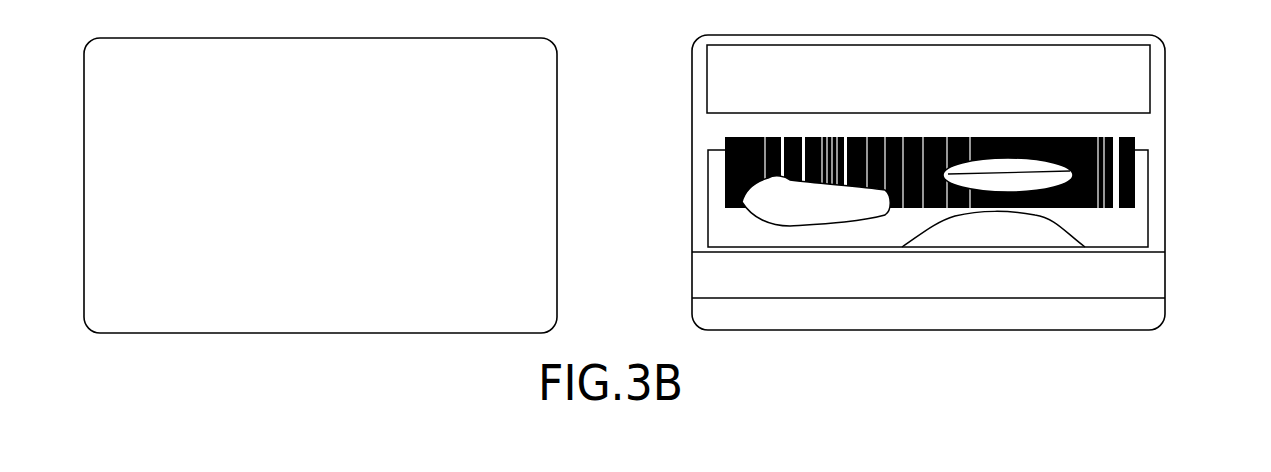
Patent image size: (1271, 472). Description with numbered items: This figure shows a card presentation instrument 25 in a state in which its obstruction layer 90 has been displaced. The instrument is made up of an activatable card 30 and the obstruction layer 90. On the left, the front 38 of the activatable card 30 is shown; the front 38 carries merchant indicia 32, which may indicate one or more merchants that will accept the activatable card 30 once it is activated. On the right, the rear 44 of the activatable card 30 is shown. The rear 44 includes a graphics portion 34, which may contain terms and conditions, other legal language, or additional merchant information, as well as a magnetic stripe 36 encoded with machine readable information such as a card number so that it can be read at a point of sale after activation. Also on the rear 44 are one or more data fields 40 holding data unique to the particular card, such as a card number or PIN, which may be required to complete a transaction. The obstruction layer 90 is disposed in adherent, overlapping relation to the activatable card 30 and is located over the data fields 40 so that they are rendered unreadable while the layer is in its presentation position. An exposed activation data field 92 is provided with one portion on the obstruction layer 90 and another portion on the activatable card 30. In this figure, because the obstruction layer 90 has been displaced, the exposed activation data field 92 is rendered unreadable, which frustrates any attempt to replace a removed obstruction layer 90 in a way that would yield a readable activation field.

The card presentation instrument 25 is at (640, 108).
The activatable card 30 is at (552, 262).
The merchant indicia 32 is at (360, 255).
The graphics portion 34 is at (1127, 88).
The magnetic stripe 36 is at (1153, 277).
The front 38 is at (552, 180).
The data field 40 is at (1048, 165).
The rear 44 is at (707, 155).
The obstruction layer 90 is at (1140, 178).
The exposed activation data field 92 is at (1100, 208).